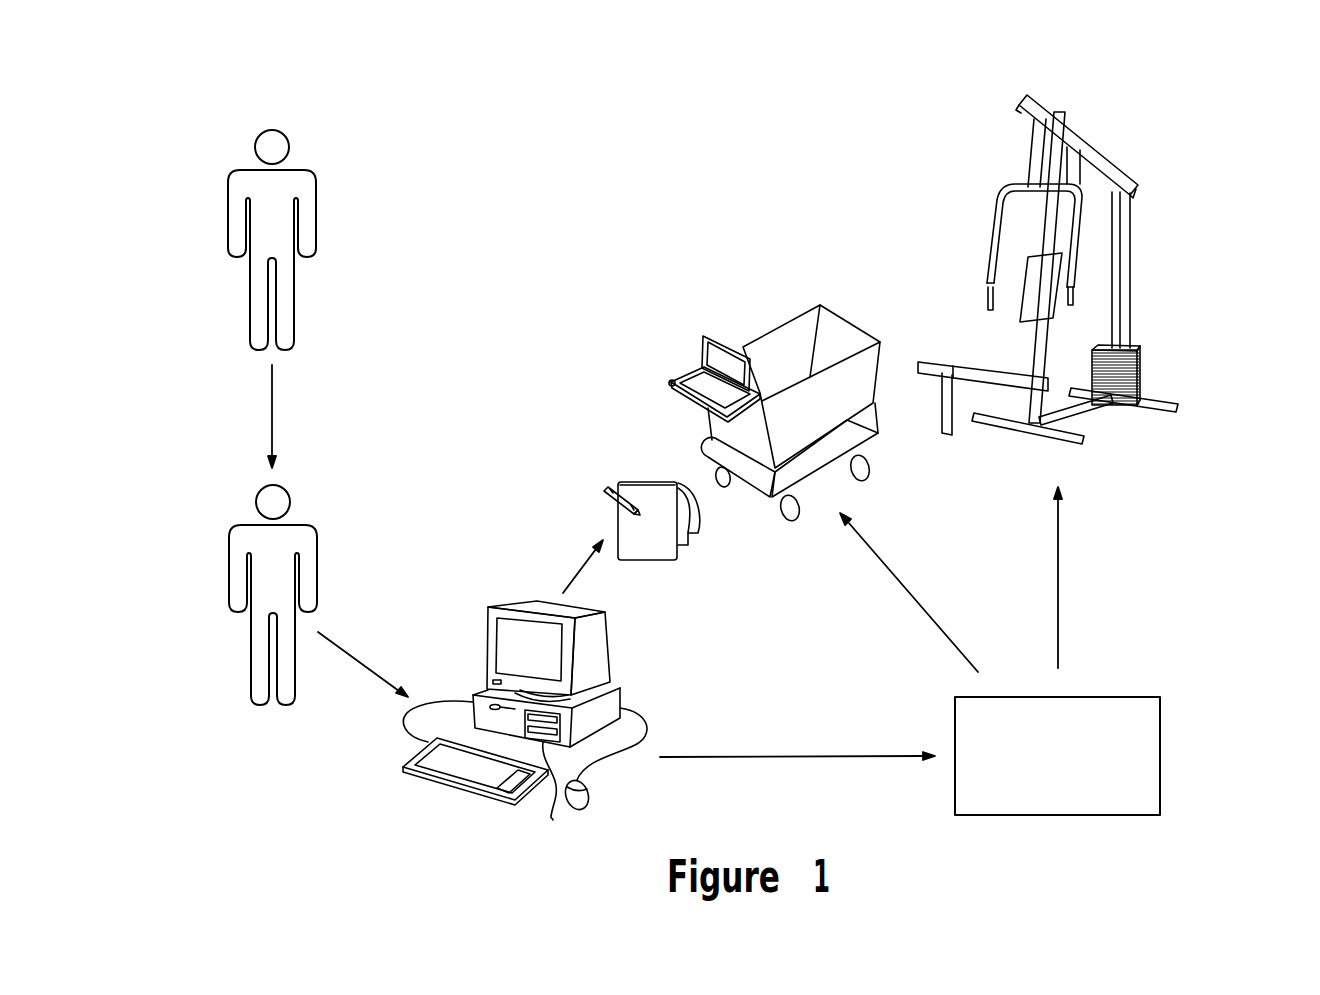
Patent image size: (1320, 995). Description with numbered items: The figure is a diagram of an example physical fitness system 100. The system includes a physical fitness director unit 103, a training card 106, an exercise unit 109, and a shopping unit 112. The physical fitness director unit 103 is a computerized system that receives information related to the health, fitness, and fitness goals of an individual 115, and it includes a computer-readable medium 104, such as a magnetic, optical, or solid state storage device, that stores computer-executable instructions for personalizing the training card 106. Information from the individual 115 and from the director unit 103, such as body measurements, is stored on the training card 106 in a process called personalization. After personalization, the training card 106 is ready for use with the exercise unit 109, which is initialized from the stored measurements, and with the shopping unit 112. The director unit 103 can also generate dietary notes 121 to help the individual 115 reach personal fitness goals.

The physical fitness system 100 is at (1216, 100).
The individual 115 is at (228, 215).
The shopping unit 112 is at (230, 572).
The physical fitness director unit 103 is at (512, 603).
The computer-readable medium 104 is at (552, 797).
The dietary notes 121 is at (648, 562).
The training card 106 is at (1120, 697).
The exercise unit 109 is at (1100, 158).